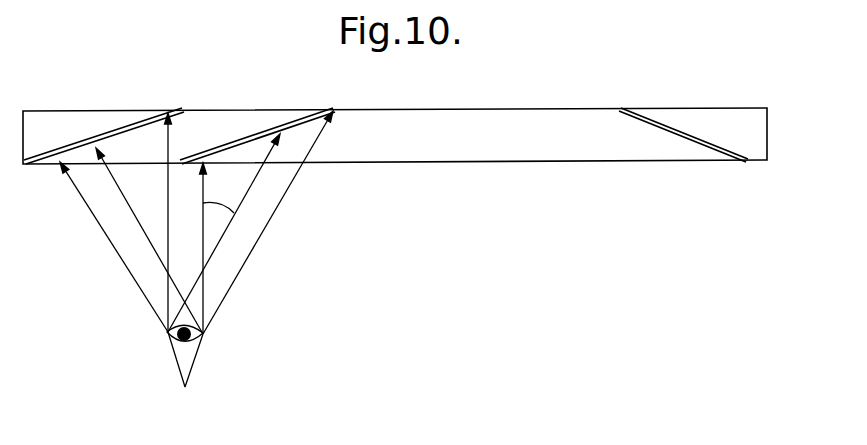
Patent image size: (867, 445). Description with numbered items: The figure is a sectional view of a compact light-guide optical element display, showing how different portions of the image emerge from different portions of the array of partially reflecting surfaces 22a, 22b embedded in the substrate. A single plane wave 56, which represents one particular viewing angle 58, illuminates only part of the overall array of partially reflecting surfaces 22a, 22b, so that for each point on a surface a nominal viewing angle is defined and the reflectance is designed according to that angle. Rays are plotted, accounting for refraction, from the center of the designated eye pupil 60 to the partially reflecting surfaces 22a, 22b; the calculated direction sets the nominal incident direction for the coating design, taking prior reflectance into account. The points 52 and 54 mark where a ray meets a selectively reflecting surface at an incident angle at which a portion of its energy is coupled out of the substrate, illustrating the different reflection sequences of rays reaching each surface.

The partially reflecting surface 22a is at (232, 144).
The partially reflecting surface 22b is at (88, 145).
The point 52 is at (302, 110).
The point 54 is at (202, 163).
The plane wave 56 is at (270, 205).
The viewing angle 58 is at (217, 227).
The eye pupil 60 is at (200, 345).